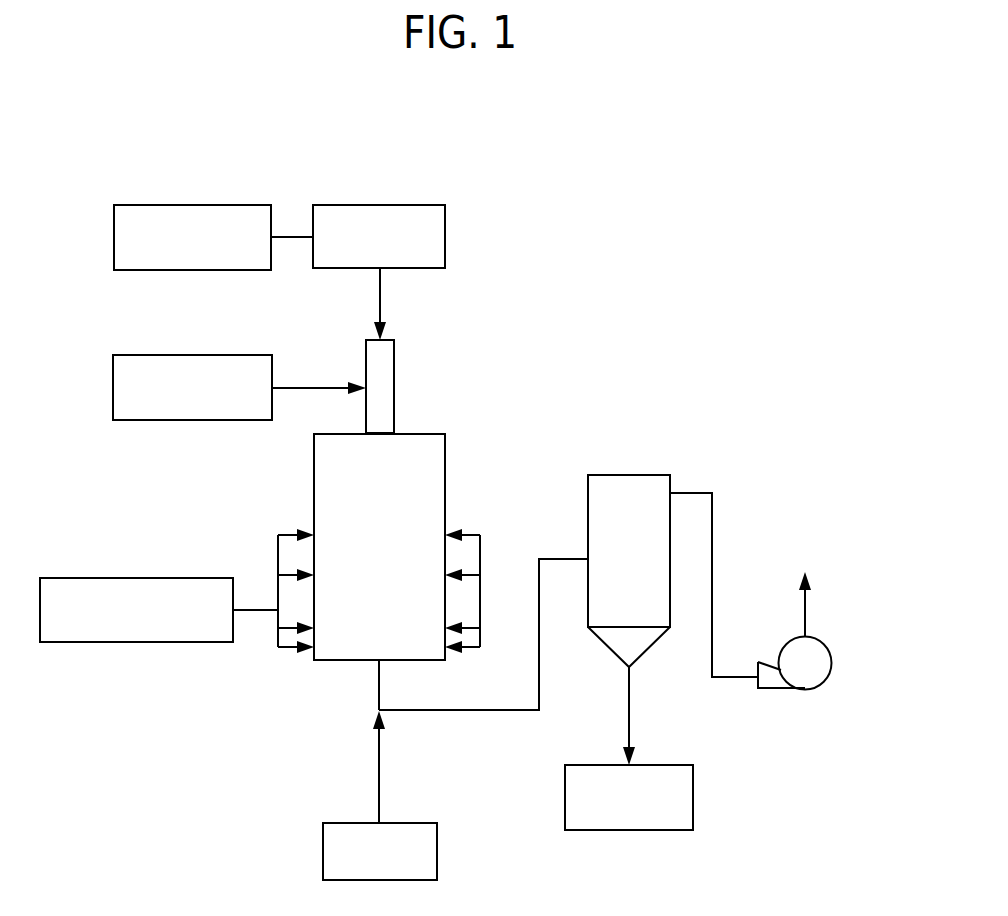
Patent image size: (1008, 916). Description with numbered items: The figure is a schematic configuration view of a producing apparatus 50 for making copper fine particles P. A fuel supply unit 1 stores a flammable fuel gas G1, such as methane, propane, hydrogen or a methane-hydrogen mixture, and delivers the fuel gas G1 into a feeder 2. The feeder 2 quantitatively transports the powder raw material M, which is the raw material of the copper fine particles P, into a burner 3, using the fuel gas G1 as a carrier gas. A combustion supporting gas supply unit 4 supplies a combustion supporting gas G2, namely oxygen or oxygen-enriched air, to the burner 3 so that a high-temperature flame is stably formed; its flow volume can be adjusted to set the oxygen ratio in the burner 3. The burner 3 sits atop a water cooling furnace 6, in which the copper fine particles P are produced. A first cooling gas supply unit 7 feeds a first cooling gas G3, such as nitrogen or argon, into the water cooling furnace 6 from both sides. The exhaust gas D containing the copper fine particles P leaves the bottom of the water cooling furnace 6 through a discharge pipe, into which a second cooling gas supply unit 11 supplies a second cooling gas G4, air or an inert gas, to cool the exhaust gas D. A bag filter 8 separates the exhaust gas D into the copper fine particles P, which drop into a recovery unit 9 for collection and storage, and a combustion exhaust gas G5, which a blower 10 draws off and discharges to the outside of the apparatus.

The producing apparatus 50 is at (92, 92).
The fuel supply unit 1 is at (190, 205).
The feeder 2 is at (382, 205).
The burner 3 is at (394, 378).
The combustion supporting gas supply unit 4 is at (198, 355).
The water cooling furnace 6 is at (445, 484).
The first cooling gas supply unit 7 is at (138, 578).
The bag filter 8 is at (630, 475).
The recovery unit 9 is at (693, 797).
The blower 10 is at (826, 650).
The second cooling gas supply unit 11 is at (437, 850).
The fuel gas G1 is at (293, 236).
The combustion supporting gas G2 is at (306, 387).
The first cooling gas G3 is at (278, 548).
The second cooling gas G4 is at (378, 784).
The combustion exhaust gas G5 is at (712, 523).
The powder raw material M is at (381, 302).
The exhaust gas D is at (468, 712).
The copper fine particles P is at (631, 710).